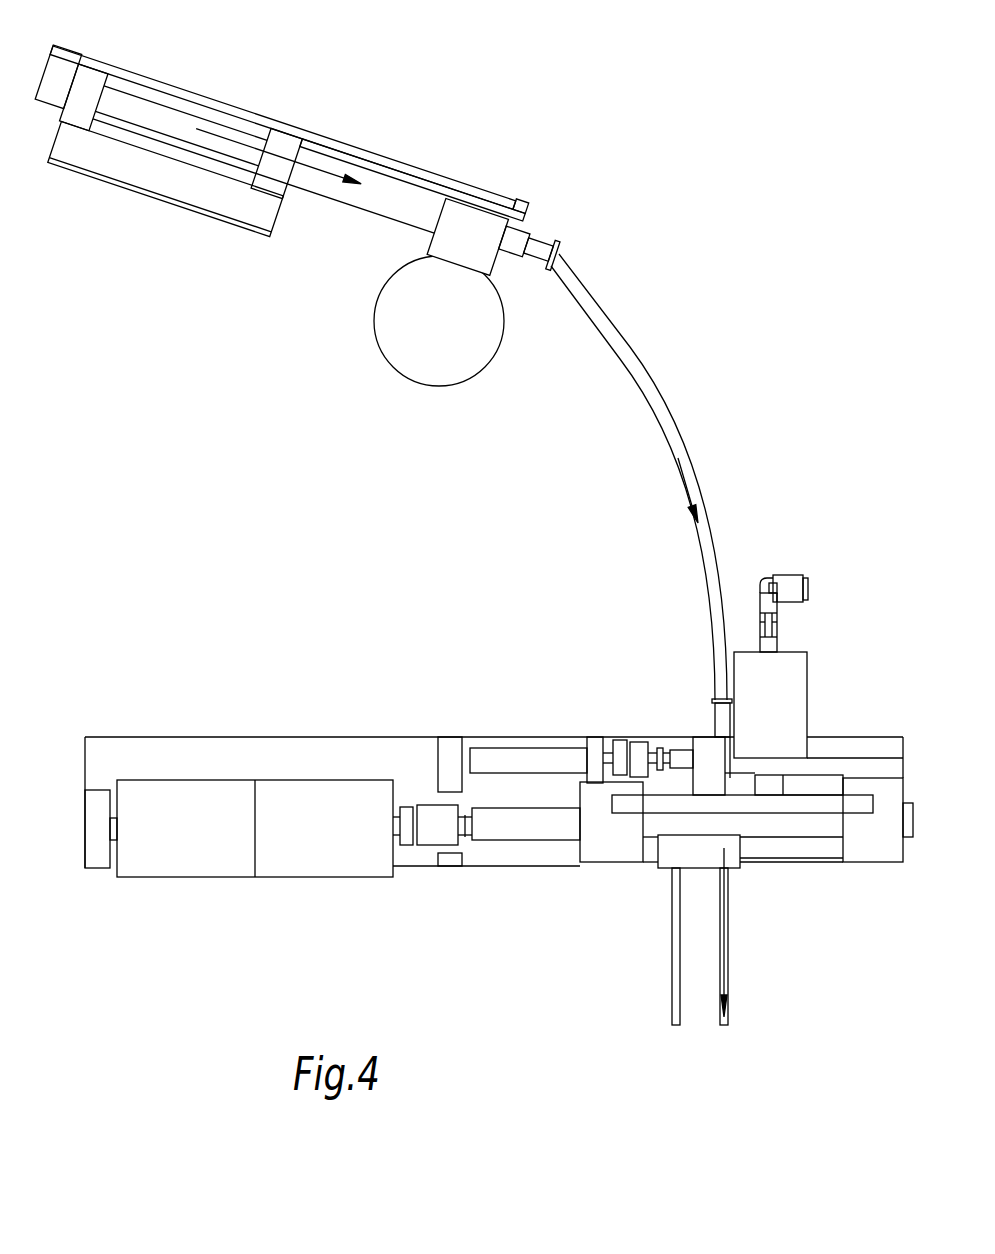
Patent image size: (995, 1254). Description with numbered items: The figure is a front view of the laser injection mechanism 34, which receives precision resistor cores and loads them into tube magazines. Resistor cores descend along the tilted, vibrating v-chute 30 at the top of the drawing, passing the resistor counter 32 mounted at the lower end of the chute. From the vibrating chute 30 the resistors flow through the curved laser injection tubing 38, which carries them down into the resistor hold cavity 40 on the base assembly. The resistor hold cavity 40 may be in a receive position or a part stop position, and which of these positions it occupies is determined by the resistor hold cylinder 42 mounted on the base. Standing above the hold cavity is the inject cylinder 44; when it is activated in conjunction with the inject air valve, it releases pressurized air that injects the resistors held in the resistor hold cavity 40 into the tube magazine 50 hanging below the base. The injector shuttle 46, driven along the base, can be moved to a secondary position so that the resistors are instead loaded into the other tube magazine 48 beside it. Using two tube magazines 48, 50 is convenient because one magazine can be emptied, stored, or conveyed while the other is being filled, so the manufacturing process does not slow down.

The v-chute 30 is at (125, 73).
The resistor counter 32 is at (505, 192).
The laser injection mechanism 34 is at (340, 700).
The laser injection tubing 38 is at (658, 403).
The resistor hold cavity 40 is at (727, 740).
The resistor hold cylinder 42 is at (532, 752).
The inject cylinder 44 is at (798, 698).
The injector shuttle 46 is at (531, 833).
The tube magazine 48 is at (672, 952).
The tube magazine 50 is at (728, 952).